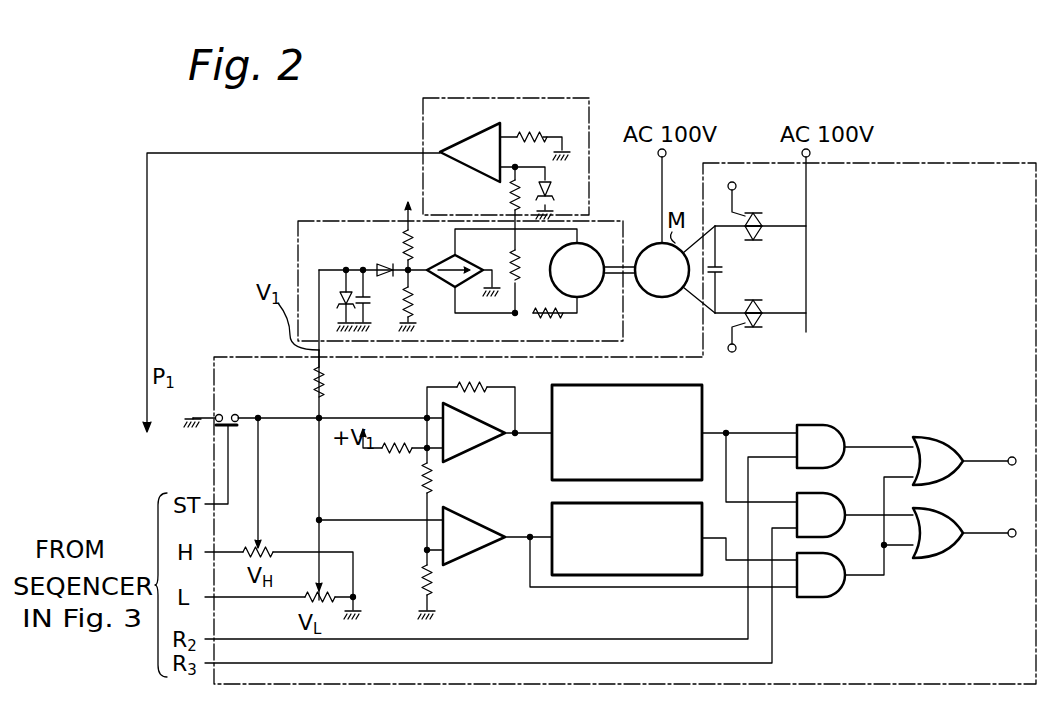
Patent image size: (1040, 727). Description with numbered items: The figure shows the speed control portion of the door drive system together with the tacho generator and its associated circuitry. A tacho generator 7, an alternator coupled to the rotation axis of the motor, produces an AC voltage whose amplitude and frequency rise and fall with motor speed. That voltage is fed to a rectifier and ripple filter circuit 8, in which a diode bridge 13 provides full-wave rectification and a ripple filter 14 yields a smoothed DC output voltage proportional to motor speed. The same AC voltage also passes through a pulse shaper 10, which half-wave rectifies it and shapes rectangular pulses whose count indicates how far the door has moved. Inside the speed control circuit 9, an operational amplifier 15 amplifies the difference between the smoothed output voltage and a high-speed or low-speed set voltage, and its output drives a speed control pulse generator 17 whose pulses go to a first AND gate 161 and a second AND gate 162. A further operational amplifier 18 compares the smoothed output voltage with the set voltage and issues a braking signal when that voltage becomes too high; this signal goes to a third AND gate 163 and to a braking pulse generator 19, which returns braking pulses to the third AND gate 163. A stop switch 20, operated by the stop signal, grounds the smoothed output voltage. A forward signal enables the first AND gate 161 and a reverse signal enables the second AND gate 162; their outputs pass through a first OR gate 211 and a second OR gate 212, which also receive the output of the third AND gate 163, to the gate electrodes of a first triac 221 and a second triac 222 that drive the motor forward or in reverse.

The tacho generator 7 is at (603, 235).
The rectifier and ripple filter circuit 8 is at (306, 220).
The speed control circuit 9 is at (247, 355).
The pulse shaper 10 is at (589, 122).
The diode bridge 13 is at (447, 288).
The ripple filter 14 is at (343, 292).
The operational amplifier 15 is at (478, 450).
The first AND gate 161 is at (827, 424).
The second AND gate 162 is at (822, 494).
The third AND gate 163 is at (827, 554).
The speed control pulse generator 17 is at (702, 408).
The operational amplifier 18 is at (482, 524).
The braking pulse generator 19 is at (663, 508).
The stop switch 20 is at (226, 409).
The first OR gate 211 is at (954, 437).
The second OR gate 212 is at (964, 510).
The first triac 221 is at (750, 240).
The second triac 222 is at (751, 302).